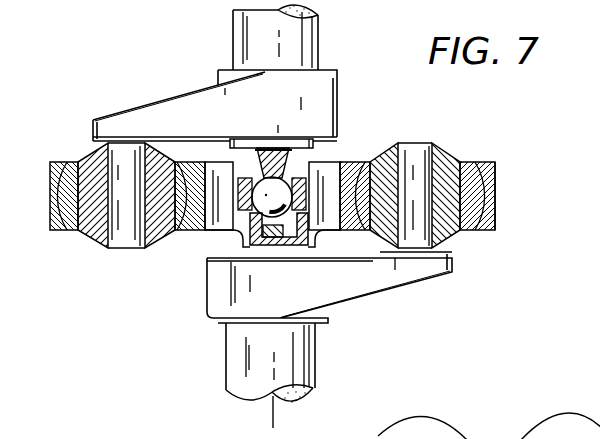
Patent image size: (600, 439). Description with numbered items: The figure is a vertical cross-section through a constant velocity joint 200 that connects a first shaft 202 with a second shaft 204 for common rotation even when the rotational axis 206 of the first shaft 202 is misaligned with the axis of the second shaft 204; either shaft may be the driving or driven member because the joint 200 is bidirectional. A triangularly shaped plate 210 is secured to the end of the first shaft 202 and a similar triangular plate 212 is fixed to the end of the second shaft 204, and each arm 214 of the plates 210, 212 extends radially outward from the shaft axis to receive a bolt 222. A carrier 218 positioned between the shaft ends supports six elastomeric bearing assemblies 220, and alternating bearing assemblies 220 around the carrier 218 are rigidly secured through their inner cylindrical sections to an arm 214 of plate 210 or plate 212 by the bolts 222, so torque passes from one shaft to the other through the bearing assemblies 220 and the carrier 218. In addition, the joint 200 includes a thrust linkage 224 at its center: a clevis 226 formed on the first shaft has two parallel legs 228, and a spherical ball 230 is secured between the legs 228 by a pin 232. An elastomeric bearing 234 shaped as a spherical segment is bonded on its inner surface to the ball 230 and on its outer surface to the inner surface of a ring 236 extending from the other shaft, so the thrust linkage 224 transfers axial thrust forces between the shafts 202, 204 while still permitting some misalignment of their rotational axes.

The constant velocity joint 200 is at (425, 105).
The first shaft 202 is at (318, 358).
The second shaft 204 is at (321, 41).
The rotational axis of first shaft 206 is at (273, 420).
The triangularly shaped plate 210 is at (213, 318).
The triangular shaped plate 212 is at (219, 78).
The arm 214 is at (223, 118).
The carrier 218 is at (500, 214).
The elastomeric bearing assembly 220 is at (83, 150).
The bolt 222 is at (420, 152).
The thrust linkage 224 is at (323, 142).
The clevis 226 is at (235, 231).
The parallel legs 228 is at (320, 232).
The spherical ball 230 is at (284, 186).
The pin 232 is at (238, 192).
The elastomeric bearing 234 is at (288, 245).
The ring 236 is at (272, 240).